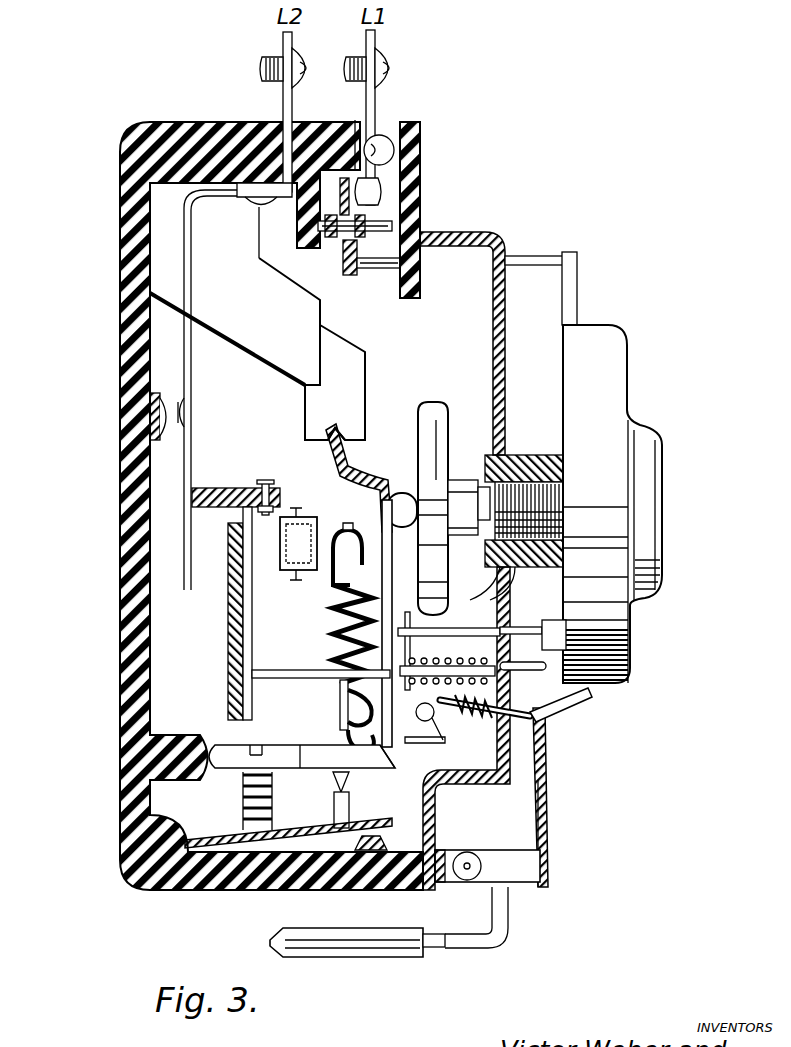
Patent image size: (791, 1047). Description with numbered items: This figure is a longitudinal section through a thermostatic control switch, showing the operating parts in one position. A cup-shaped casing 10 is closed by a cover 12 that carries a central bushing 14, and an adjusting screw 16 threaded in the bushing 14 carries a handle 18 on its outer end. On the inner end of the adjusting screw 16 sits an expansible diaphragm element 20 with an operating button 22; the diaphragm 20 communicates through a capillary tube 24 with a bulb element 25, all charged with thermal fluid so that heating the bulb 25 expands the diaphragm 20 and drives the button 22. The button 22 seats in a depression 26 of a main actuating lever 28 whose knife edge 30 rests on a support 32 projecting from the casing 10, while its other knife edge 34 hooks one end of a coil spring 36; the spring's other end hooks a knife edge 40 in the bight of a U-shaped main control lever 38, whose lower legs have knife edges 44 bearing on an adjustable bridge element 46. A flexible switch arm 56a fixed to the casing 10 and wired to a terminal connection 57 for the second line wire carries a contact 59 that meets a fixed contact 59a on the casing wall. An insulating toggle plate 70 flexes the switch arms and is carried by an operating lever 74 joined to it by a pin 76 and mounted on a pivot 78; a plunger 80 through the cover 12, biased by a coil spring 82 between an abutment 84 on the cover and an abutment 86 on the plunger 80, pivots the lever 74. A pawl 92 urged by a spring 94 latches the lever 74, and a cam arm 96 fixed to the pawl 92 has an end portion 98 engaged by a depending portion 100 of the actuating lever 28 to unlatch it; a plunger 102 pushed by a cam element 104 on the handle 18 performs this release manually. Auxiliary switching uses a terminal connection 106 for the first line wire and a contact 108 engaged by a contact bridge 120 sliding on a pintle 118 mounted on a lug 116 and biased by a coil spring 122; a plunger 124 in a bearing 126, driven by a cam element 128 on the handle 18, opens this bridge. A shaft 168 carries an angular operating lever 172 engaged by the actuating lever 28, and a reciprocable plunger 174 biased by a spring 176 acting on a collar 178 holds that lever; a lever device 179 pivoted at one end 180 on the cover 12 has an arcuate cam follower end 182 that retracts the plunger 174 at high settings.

The casing 10 is at (120, 172).
The cover 12 is at (500, 235).
The bushing 14 is at (510, 455).
The adjusting screw 16 is at (532, 475).
The handle 18 is at (630, 365).
The diaphragm element 20 is at (437, 488).
The operating button 22 is at (405, 493).
The capillary tube 24 is at (508, 920).
The bulb element 25 is at (360, 950).
The depression 26 is at (362, 490).
The main actuating lever 28 is at (383, 565).
The knife edge 30 is at (330, 438).
The support 32 is at (363, 365).
The knife edge 34 is at (340, 700).
The coil spring 36 is at (333, 602).
The main control lever 38 is at (340, 688).
The knife edge 40 is at (362, 535).
The knife edge 44 is at (350, 785).
The adjustable bridge element 46 is at (215, 838).
The flexible switch arm 56a is at (192, 305).
The terminal connection 57 is at (283, 92).
The contact 59 is at (187, 398).
The fixed contact 59a is at (150, 395).
The toggle plate 70 is at (225, 488).
The operating lever 74 is at (228, 660).
The pin 76 is at (265, 487).
The pivot 78 is at (278, 570).
The plunger 80 is at (280, 670).
The coil spring 82 is at (447, 660).
The abutment 84 is at (407, 612).
The abutment 86 is at (478, 632).
The pawl 92 is at (220, 748).
The spring 94 is at (273, 810).
The cam arm 96 is at (305, 762).
The end portion 98 is at (385, 770).
The depending portion 100 is at (345, 742).
The plunger 102 is at (545, 627).
The cam element 104 is at (556, 620).
The terminal connection 106 is at (375, 100).
The contact 108 is at (372, 190).
The lug 116 is at (259, 240).
The pintle 118 is at (355, 235).
The contact bridge 120 is at (363, 132).
The coil spring 122 is at (332, 240).
The plunger 124 is at (535, 256).
The bearing 126 is at (405, 292).
The cam element 128 is at (578, 280).
The shaft 168 is at (425, 722).
The angular operating lever 172 is at (485, 733).
The reciprocable plunger 174 is at (546, 745).
The spring 176 is at (508, 675).
The collar 178 is at (472, 721).
The lever device 179 is at (548, 775).
The pivot 180 is at (468, 858).
The arcuate cam follower end 182 is at (580, 700).